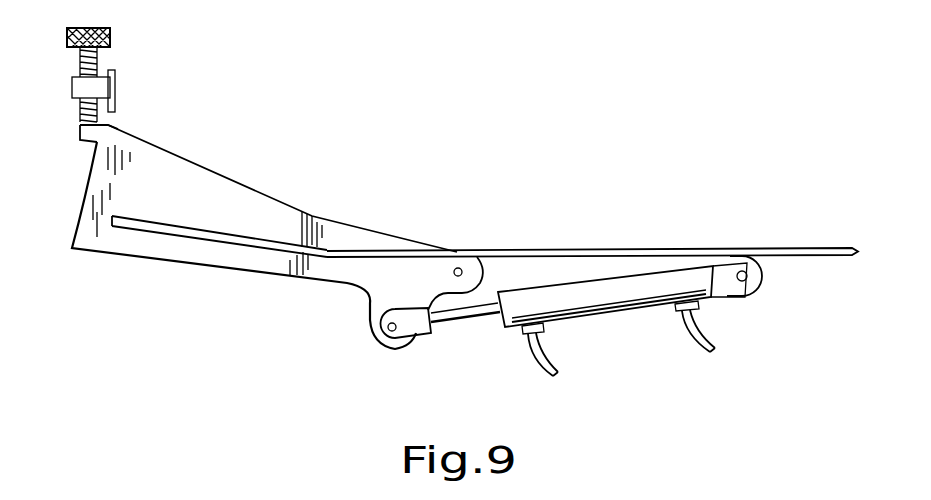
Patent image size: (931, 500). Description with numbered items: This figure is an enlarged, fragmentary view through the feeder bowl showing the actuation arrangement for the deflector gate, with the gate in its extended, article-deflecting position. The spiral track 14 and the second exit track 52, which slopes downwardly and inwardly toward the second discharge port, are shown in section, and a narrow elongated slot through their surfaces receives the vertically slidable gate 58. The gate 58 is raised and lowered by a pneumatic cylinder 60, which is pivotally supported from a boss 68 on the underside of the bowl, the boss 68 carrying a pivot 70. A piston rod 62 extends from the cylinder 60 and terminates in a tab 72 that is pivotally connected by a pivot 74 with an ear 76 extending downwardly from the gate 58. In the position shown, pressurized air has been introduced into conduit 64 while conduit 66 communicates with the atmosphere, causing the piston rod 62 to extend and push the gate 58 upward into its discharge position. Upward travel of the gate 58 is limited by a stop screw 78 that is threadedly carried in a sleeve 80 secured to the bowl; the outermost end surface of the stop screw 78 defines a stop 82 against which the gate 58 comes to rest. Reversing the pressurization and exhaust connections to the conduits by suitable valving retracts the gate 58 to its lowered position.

The spiral track 14 is at (608, 248).
The second exit track 52 is at (213, 229).
The slidable gate 58 is at (173, 250).
The pneumatic cylinder 60 is at (612, 308).
The piston rod 62 is at (471, 322).
The conduit 64 is at (705, 335).
The conduit 66 is at (550, 362).
The boss 68 is at (765, 267).
The pivot 70 is at (743, 272).
The tab 72 is at (423, 333).
The pivot 74 is at (380, 343).
The ear 76 is at (363, 295).
The stop screw 78 is at (110, 34).
The sleeve 80 is at (104, 89).
The stop 82 is at (80, 128).